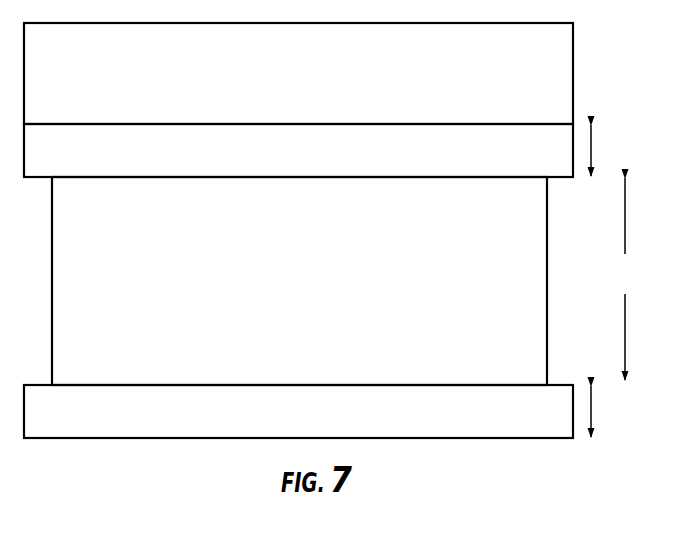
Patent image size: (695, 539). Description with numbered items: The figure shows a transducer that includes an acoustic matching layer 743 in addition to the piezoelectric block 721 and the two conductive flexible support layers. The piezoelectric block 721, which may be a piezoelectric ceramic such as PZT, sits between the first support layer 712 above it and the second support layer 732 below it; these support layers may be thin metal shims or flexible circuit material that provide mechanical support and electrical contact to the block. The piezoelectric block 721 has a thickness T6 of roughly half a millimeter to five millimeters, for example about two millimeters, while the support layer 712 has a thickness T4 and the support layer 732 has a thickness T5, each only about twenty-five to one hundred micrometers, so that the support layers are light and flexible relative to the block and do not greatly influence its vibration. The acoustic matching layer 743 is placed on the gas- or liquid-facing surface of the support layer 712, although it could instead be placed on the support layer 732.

The acoustic matching layer 743 is at (316, 105).
The support layer 712 is at (362, 164).
The piezoelectric block 721 is at (316, 318).
The support layer 732 is at (364, 426).
The thickness of first flexible support layer T4 is at (605, 150).
The thickness of second flexible support layer T5 is at (605, 411).
The thickness of piezoelectric block T6 is at (625, 279).